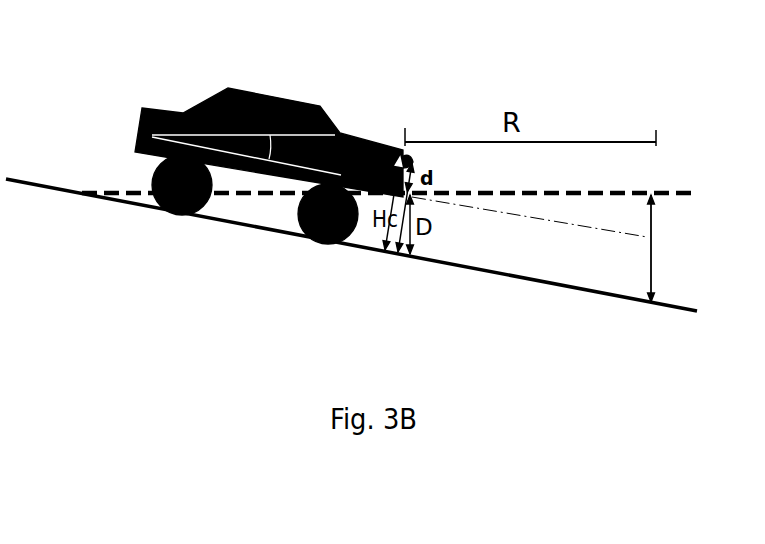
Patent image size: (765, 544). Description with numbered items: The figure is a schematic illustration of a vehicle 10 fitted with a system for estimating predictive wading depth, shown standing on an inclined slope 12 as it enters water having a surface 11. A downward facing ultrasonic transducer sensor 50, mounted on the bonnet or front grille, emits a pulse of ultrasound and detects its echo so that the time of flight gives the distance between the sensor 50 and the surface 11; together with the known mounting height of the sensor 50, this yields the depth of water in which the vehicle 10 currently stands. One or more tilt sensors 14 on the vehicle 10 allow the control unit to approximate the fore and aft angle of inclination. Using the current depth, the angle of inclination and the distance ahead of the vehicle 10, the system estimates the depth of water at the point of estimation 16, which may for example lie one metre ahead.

The vehicle 10 is at (297, 129).
The surface 11 is at (112, 190).
The inclined slope 12 is at (122, 207).
The tilt sensor 14 is at (210, 97).
The point of estimation 16 is at (623, 186).
The ultrasonic transducer sensor 50 is at (413, 163).